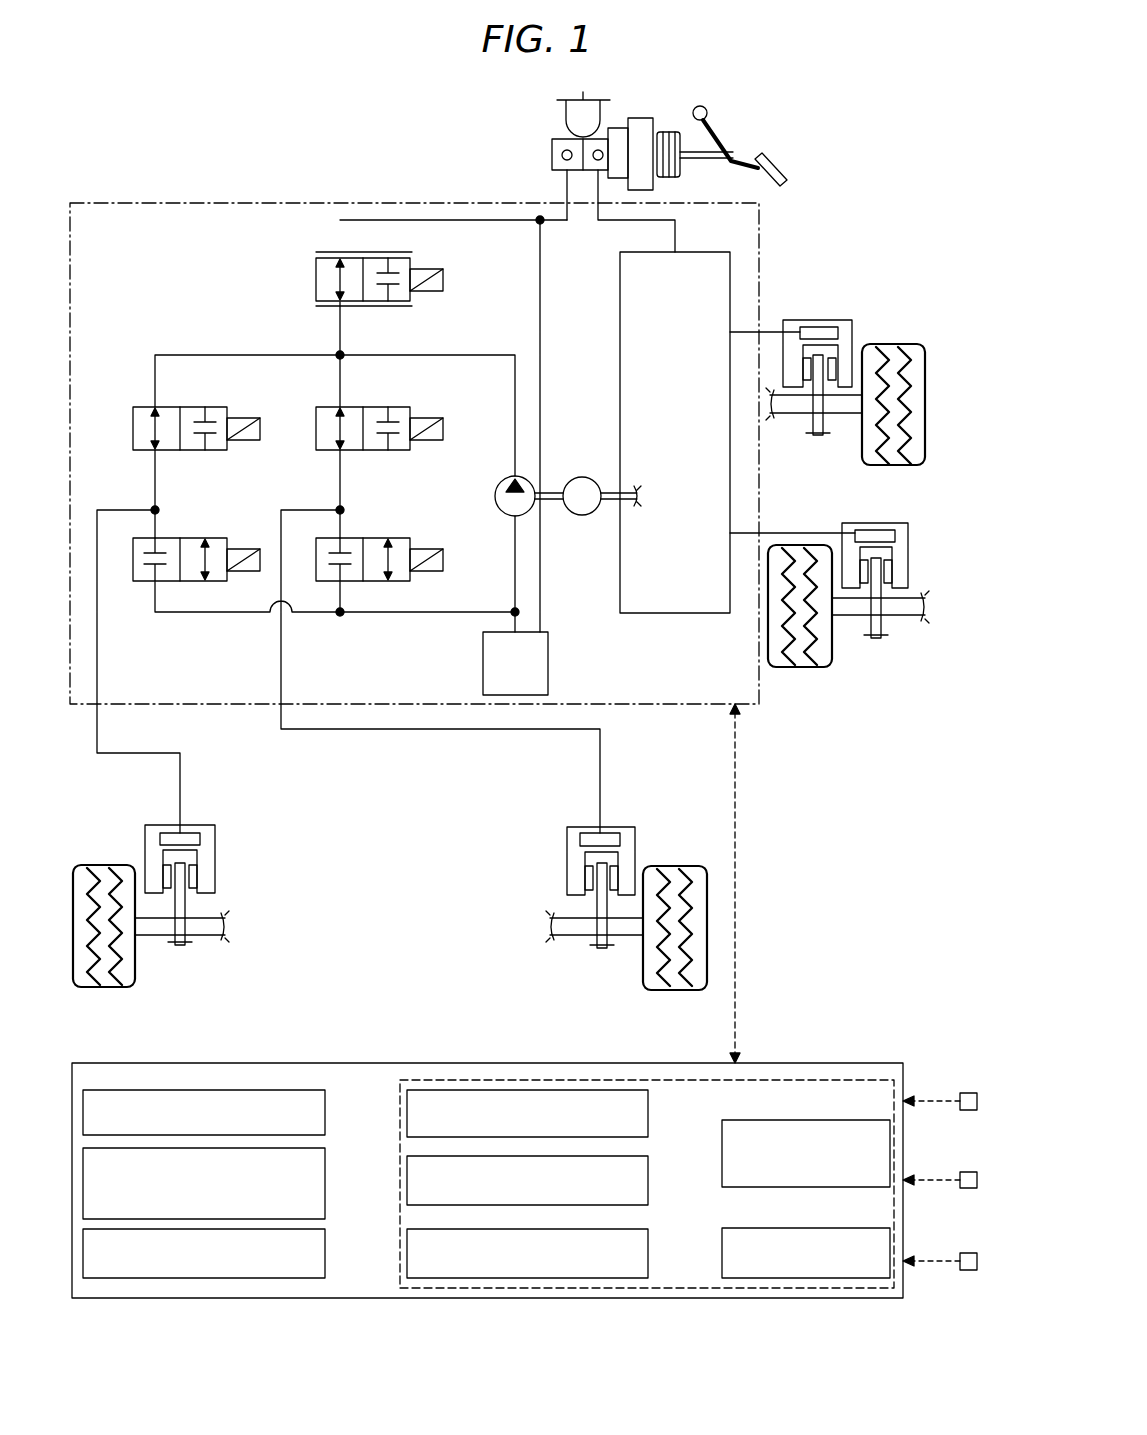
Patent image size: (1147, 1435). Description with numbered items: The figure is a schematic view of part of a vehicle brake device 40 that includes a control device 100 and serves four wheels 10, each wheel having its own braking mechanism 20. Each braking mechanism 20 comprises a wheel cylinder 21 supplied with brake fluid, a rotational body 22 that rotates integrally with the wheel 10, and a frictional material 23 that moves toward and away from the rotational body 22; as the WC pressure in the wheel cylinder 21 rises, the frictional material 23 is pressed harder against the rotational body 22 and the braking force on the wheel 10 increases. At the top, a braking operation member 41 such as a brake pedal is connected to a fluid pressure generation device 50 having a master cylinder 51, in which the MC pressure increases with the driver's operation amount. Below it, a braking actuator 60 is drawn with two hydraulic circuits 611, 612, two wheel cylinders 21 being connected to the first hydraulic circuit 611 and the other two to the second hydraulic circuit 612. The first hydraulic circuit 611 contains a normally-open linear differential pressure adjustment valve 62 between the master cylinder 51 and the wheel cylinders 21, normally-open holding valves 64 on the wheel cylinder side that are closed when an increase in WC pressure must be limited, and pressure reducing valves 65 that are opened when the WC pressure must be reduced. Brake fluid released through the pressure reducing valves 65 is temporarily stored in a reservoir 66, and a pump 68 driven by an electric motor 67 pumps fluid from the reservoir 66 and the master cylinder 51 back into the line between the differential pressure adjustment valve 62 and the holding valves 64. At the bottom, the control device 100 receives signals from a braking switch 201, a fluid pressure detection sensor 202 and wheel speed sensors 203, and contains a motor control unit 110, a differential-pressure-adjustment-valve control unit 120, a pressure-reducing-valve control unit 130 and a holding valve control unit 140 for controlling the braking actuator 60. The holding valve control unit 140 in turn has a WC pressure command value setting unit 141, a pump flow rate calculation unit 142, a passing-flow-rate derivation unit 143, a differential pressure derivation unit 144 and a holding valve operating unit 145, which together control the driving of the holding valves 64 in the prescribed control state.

The wheel 10 is at (925, 406).
The braking mechanism 20 is at (888, 268).
The wheel cylinder 21 is at (825, 326).
The rotational body 22 is at (814, 425).
The frictional material 23 is at (832, 368).
The brake device 40 is at (772, 748).
The braking operation member 41 is at (782, 180).
The fluid pressure generation device 50 is at (537, 108).
The master cylinder 51 is at (552, 155).
The braking actuator 60 is at (107, 203).
The first hydraulic circuit 611 is at (395, 219).
The second hydraulic circuit 612 is at (718, 252).
The differential pressure adjustment valve 62 is at (405, 254).
The holding valve 64 is at (216, 407).
The pressure reducing valve 65 is at (216, 538).
The reservoir 66 is at (483, 664).
The electric motor 67 is at (583, 477).
The pump 68 is at (496, 488).
The control device 100 is at (852, 1063).
The motor control unit 110 is at (325, 1117).
The differential-pressure-adjustment-valve control unit 120 is at (325, 1187).
The pressure-reducing-valve control unit 130 is at (325, 1254).
The holding valve control unit 140 is at (425, 1079).
The WC pressure command value setting unit 141 is at (648, 1117).
The pump flow rate calculation unit 142 is at (648, 1182).
The passing-flow-rate derivation unit 143 is at (648, 1255).
The differential pressure derivation unit 144 is at (816, 1114).
The holding valve operating unit 145 is at (818, 1222).
The braking switch 201 is at (968, 1093).
The fluid pressure detection sensor 202 is at (968, 1172).
The wheel speed sensor 203 is at (968, 1253).